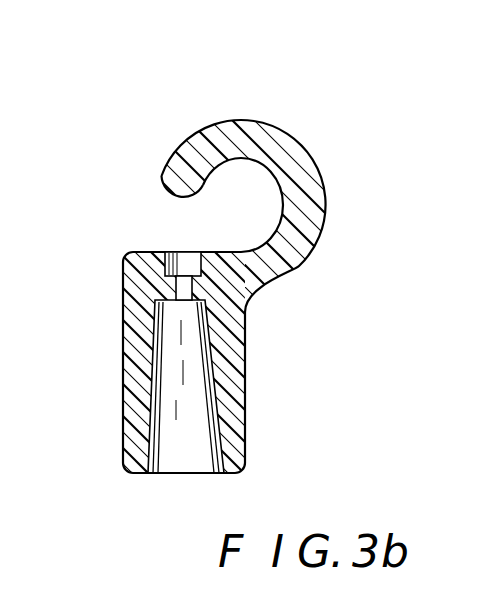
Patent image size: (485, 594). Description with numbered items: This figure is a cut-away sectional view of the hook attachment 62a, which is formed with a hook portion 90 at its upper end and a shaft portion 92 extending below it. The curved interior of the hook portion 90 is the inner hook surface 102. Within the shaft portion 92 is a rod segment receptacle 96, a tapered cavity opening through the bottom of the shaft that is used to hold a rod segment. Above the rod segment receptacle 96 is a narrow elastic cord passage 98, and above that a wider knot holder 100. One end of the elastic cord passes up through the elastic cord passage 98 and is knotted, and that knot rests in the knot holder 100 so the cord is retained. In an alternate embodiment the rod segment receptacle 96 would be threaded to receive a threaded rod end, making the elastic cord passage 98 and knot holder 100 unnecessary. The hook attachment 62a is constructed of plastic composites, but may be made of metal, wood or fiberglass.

The hook attachment 62a is at (279, 94).
The hook portion 90 is at (323, 207).
The shaft portion 92 is at (245, 402).
The rod segment receptacle 96 is at (148, 433).
The elastic cord passage 98 is at (178, 297).
The knot holder 100 is at (188, 252).
The inner hook surface 102 is at (279, 191).